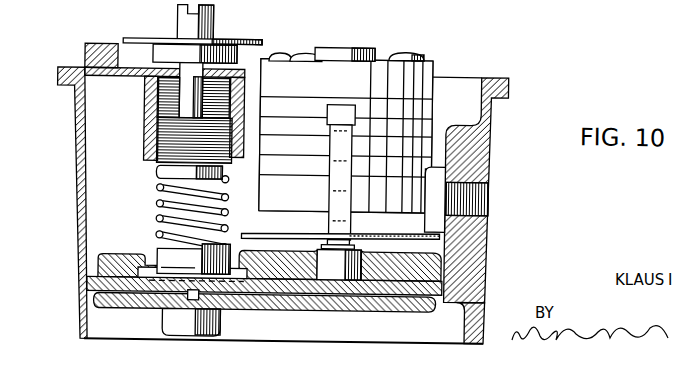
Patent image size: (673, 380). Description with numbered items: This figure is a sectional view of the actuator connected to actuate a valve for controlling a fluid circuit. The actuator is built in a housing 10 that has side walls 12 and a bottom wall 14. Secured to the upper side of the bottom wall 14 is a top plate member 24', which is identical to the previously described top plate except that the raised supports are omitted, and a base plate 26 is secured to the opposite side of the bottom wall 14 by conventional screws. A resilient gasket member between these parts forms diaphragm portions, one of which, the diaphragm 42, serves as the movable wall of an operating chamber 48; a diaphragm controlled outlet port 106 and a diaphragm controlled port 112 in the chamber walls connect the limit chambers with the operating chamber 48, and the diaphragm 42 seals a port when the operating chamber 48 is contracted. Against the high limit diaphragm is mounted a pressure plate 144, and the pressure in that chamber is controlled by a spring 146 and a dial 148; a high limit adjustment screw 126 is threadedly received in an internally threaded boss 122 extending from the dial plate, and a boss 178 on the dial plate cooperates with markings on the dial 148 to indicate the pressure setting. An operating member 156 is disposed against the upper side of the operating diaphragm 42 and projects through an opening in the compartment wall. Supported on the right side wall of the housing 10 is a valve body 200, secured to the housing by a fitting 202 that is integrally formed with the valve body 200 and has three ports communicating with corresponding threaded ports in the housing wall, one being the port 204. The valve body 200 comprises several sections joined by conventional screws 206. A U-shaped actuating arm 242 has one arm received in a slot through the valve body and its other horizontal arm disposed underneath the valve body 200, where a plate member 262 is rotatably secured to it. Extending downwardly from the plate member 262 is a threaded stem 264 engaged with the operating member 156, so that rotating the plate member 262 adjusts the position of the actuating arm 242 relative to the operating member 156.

The housing 10 is at (292, 206).
The side walls 12 is at (73, 134).
The bottom wall 14 is at (447, 300).
The top plate member 24' is at (128, 254).
The base plate 26 is at (426, 311).
The diaphragm 42 is at (280, 253).
The operating chamber 48 is at (390, 295).
The outlet port 106 is at (188, 304).
The port 112 is at (340, 297).
The boss 122 is at (154, 106).
The high limit adjustment screw 126 is at (166, 160).
The pressure plate 144 is at (193, 262).
The spring 146 is at (158, 222).
The dial 148 is at (219, 41).
The operating member 156 is at (339, 265).
The boss 178 is at (104, 48).
The valve body 200 is at (346, 114).
The fitting 202 is at (437, 212).
The port 204 is at (476, 204).
The screws 206 is at (300, 53).
The actuating arm 242 is at (340, 167).
The plate member 262 is at (300, 232).
The threaded stem 264 is at (322, 240).